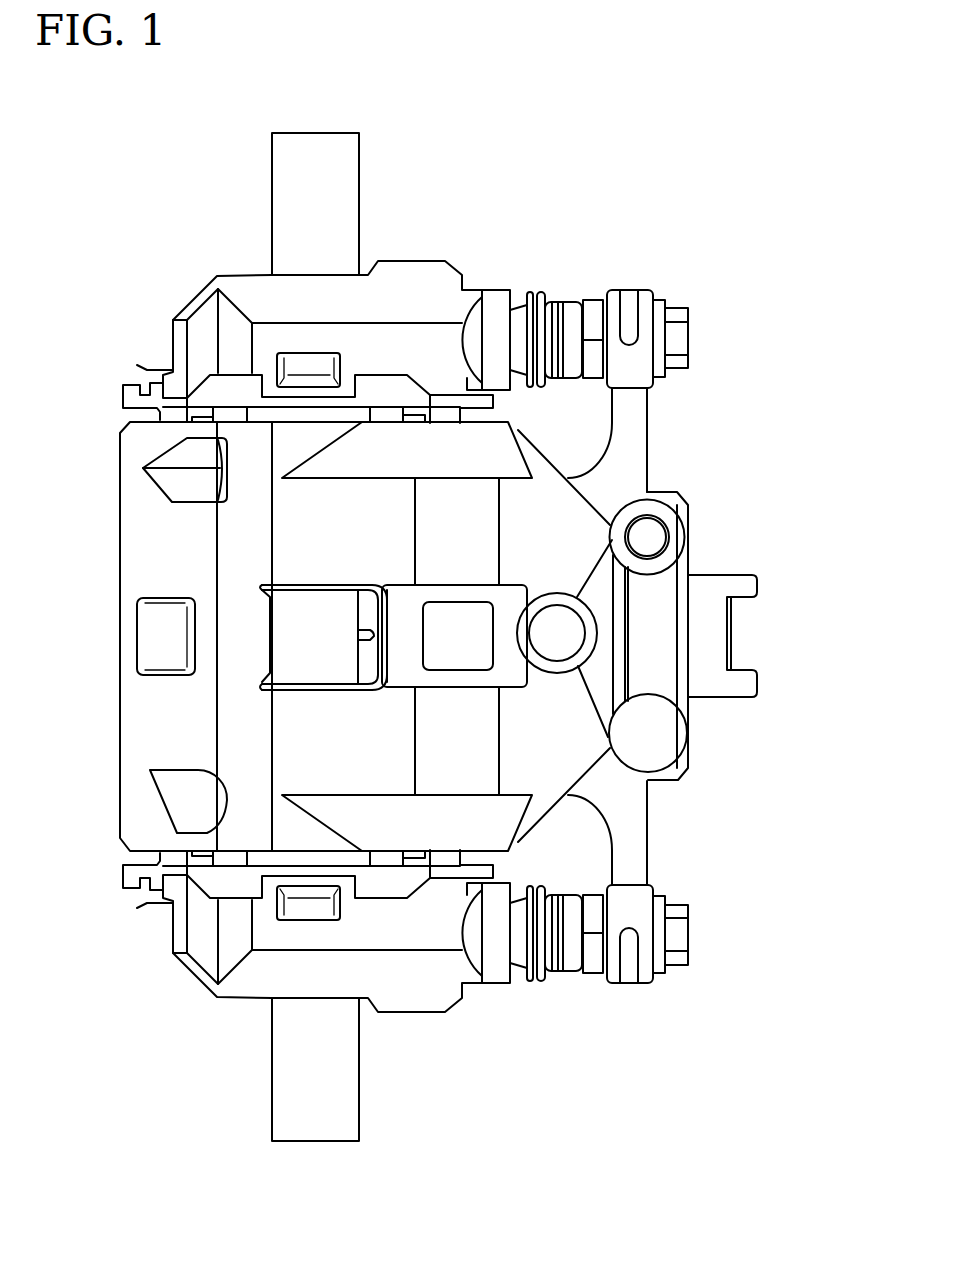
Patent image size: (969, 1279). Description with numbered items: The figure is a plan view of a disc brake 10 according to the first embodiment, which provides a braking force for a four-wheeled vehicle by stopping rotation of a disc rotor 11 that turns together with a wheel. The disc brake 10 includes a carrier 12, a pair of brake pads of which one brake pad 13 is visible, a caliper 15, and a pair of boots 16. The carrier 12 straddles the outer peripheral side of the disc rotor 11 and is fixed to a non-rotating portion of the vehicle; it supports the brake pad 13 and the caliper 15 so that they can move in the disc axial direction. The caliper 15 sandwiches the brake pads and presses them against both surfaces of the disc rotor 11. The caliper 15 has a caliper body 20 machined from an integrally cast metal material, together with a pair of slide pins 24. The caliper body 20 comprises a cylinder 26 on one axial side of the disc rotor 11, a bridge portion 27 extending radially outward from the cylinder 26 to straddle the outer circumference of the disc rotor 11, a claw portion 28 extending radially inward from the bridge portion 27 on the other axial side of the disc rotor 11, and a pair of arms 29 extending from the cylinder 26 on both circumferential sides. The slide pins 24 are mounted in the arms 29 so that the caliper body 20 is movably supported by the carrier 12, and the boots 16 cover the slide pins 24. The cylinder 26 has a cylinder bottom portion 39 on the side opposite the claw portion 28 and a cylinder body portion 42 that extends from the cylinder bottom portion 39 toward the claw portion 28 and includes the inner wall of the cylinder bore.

The disc brake 10 is at (746, 214).
The disc rotor 11 is at (360, 163).
The carrier 12 is at (194, 282).
The brake pad 13 is at (372, 612).
The caliper 15 is at (711, 481).
The boot 16 is at (540, 300).
The caliper body 20 is at (681, 792).
The slide pin 24 is at (593, 308).
The cylinder 26 is at (653, 613).
The bridge portion 27 is at (360, 540).
The claw portion 28 is at (120, 720).
The arm 29 is at (625, 303).
The cylinder bottom portion 39 is at (687, 547).
The cylinder body portion 42 is at (597, 677).